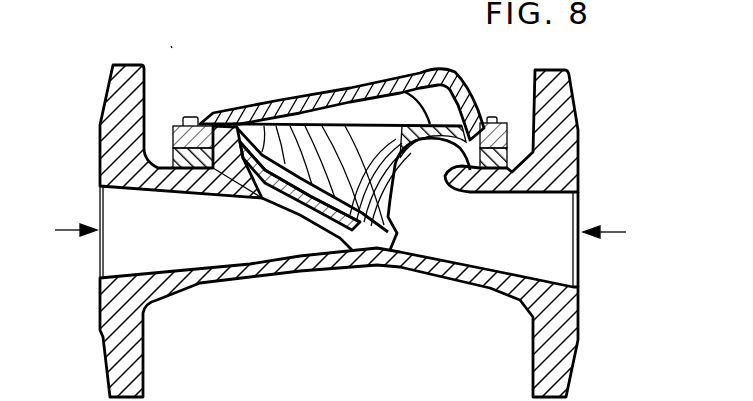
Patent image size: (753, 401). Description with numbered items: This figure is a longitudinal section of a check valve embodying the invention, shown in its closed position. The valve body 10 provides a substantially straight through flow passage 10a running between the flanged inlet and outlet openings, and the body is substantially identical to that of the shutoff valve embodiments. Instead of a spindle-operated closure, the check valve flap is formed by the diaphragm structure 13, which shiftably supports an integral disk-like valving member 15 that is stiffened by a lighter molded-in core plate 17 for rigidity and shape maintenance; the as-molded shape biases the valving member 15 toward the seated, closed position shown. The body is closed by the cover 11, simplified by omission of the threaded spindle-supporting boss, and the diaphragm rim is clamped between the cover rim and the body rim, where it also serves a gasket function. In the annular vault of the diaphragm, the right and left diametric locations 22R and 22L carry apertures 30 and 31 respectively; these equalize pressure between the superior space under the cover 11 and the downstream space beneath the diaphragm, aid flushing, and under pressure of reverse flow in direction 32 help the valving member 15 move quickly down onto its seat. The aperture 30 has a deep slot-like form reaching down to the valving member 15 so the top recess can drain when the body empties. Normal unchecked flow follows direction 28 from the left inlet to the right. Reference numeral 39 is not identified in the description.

The valve body 10 is at (440, 266).
The through flow passage 10a is at (181, 241).
The cover 11 is at (392, 83).
The diaphragm structure 13 is at (425, 116).
The valving member 15 is at (290, 213).
The core plate 17 is at (314, 238).
The left diametric location 22L is at (213, 140).
The right diametric location 22R is at (452, 140).
The flow direction 28 is at (63, 232).
The aperture 30 is at (389, 173).
The aperture 31 is at (255, 140).
The reverse flow direction 32 is at (612, 236).
The bottom portion 39 is at (370, 399).